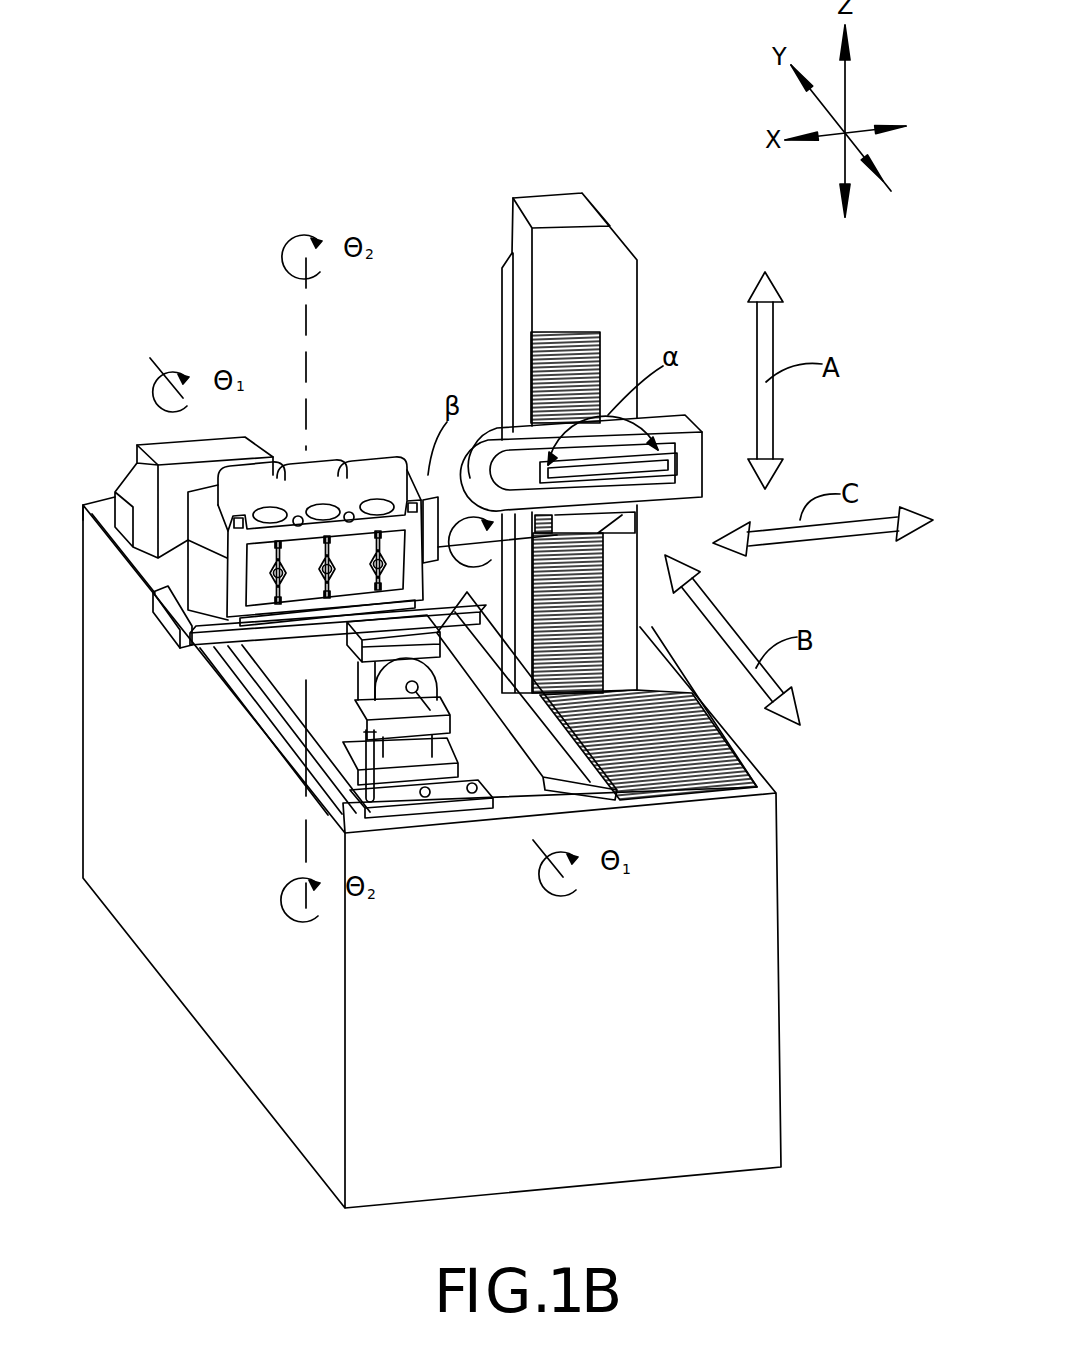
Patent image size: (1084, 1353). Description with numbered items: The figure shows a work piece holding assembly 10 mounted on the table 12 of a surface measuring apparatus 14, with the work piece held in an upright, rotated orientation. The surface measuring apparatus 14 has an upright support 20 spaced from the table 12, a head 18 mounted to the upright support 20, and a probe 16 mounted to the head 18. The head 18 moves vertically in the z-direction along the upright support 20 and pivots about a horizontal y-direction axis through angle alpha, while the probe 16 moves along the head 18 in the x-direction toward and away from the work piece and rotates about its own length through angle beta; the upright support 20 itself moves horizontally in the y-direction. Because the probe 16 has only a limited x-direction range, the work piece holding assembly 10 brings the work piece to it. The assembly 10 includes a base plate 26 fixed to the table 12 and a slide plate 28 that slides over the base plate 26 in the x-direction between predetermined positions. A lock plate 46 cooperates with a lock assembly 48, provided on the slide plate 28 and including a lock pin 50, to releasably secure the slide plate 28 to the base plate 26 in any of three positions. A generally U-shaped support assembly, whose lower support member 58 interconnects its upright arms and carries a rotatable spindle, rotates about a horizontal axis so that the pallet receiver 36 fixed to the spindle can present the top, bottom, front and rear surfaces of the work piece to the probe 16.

The work piece holding assembly 10 is at (225, 345).
The table 12 is at (633, 795).
The surface measuring apparatus 14 is at (436, 220).
The probe 16 is at (430, 488).
The head 18 is at (695, 492).
The upright support 20 is at (636, 279).
The base plate 26 is at (540, 794).
The slide plate 28 is at (293, 682).
The pallet receiver 36 is at (188, 640).
The lock plate 46 is at (432, 807).
The lock assembly 48 is at (390, 798).
The lock pin 50 is at (347, 740).
The lower support member 58 is at (297, 650).